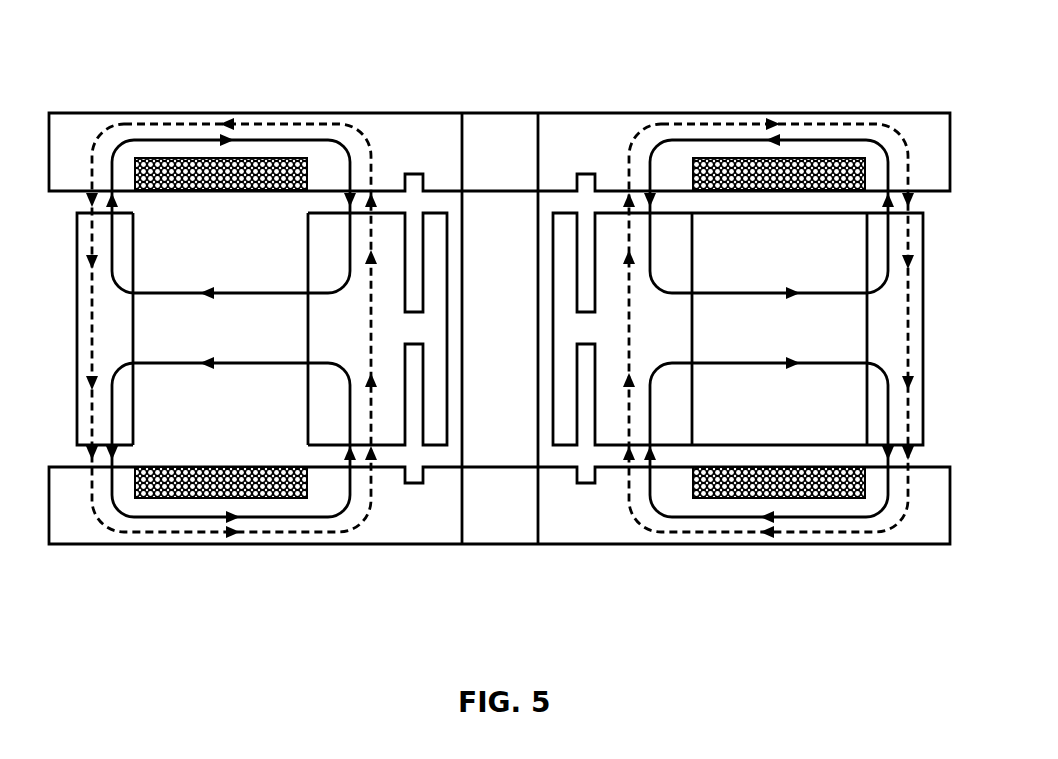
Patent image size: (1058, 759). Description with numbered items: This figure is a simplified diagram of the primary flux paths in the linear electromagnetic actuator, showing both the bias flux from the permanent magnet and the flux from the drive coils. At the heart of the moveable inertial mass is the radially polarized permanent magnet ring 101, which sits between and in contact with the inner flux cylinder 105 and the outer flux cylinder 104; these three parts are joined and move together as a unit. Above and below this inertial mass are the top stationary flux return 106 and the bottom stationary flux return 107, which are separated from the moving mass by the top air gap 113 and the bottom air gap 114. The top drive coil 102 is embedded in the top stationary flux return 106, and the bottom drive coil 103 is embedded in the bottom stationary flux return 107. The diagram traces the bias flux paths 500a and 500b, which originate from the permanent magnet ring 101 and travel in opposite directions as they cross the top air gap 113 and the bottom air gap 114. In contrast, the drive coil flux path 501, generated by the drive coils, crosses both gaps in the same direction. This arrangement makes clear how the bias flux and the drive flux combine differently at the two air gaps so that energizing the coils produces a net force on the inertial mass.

The radially polarized permanent magnet ring 101 is at (237, 408).
The top drive coil 102 is at (270, 162).
The bottom drive coil 103 is at (210, 483).
The outer flux cylinder 104 is at (82, 227).
The inner flux cylinder 105 is at (392, 228).
The top stationary flux return 106 is at (423, 137).
The bottom stationary flux return 107 is at (89, 530).
The top air gap 113 is at (866, 196).
The bottom air gap 114 is at (865, 455).
The bias flux path 500a is at (708, 126).
The bias flux path 500b is at (680, 519).
The drive coil flux path 501 is at (818, 118).